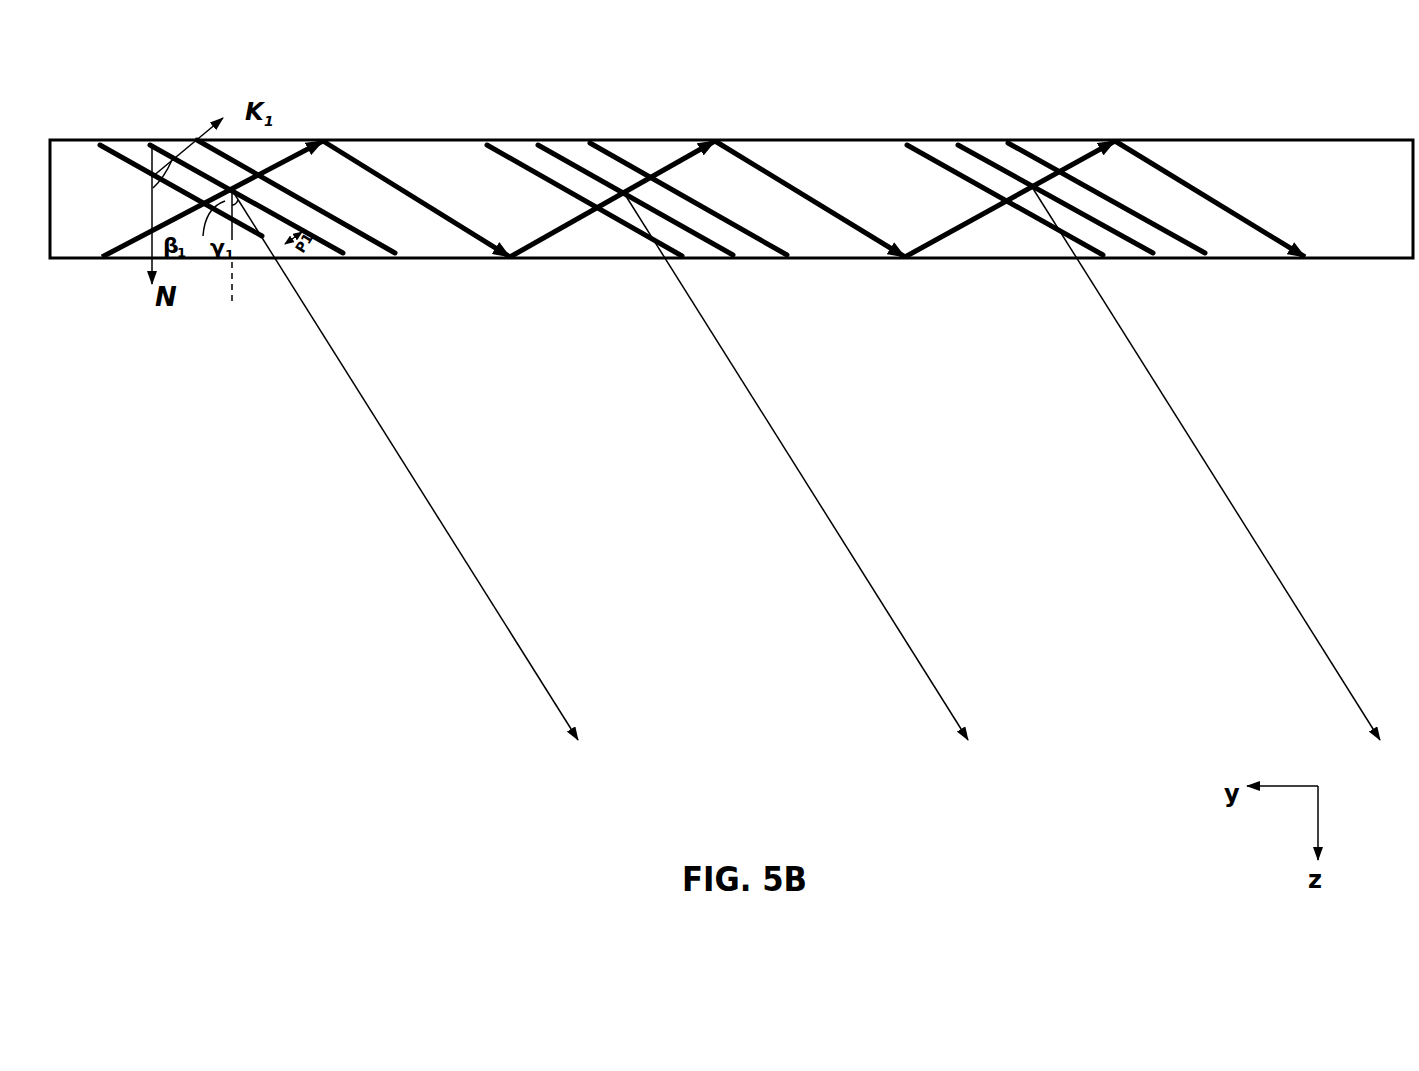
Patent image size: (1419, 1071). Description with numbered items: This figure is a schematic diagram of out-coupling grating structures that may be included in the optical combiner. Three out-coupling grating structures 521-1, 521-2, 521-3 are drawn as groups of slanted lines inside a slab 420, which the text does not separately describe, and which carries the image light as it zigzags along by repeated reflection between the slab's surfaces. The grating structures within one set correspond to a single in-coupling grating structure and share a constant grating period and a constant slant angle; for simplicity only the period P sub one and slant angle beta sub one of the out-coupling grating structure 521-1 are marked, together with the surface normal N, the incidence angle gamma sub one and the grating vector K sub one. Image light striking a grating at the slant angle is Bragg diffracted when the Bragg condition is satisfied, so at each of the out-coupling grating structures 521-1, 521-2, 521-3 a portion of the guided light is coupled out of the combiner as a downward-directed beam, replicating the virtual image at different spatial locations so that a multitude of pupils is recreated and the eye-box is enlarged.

The waveguide 420 is at (120, 260).
The out-coupling grating structure 521-1 is at (127, 157).
The out-coupling grating structure 521-2 is at (573, 168).
The out-coupling grating structure 521-3 is at (986, 160).